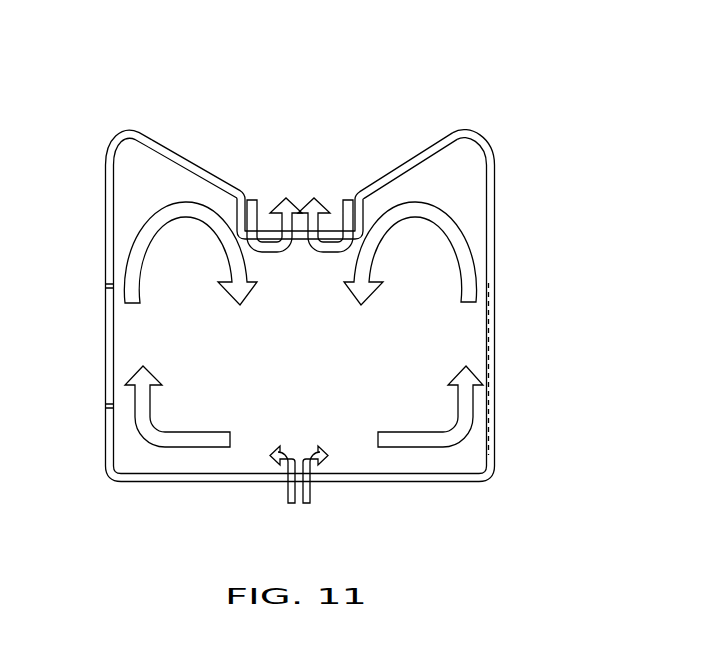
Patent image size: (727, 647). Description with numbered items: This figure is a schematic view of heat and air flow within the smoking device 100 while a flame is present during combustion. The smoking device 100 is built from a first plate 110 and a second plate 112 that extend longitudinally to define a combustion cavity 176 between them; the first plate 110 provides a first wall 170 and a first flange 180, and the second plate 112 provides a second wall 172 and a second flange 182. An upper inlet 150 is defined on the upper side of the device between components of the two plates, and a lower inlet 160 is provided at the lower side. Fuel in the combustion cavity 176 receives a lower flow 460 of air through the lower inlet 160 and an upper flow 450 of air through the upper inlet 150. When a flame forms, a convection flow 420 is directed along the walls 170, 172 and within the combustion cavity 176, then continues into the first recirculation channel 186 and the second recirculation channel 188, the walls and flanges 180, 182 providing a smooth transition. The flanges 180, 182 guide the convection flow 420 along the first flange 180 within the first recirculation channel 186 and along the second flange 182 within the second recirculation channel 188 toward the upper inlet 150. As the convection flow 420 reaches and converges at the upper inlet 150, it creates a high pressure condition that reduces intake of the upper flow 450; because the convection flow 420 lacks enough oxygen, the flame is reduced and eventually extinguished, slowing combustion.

The smoking device 100 is at (311, 285).
The first plate 110 is at (120, 484).
The second plate 112 is at (468, 484).
The upper inlet 150 is at (300, 205).
The lower inlet 160 is at (315, 478).
The first wall 170 is at (103, 340).
The second wall 172 is at (497, 358).
The combustion cavity 176 is at (447, 343).
The first flange 180 is at (160, 140).
The second flange 182 is at (447, 133).
The first recirculation channel 186 is at (131, 162).
The second recirculation channel 188 is at (468, 158).
The convection flow 420 is at (141, 233).
The upper flow 450 is at (278, 203).
The lower flow 460 is at (289, 503).